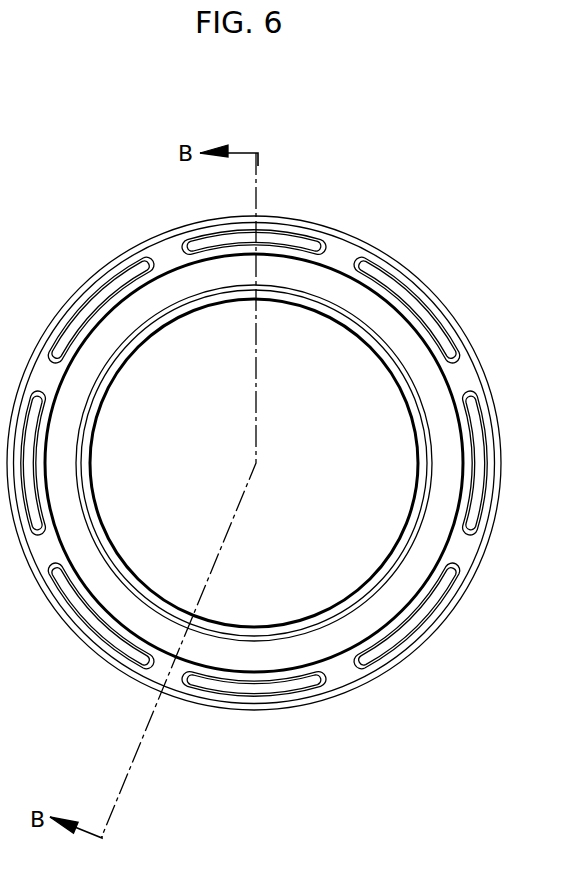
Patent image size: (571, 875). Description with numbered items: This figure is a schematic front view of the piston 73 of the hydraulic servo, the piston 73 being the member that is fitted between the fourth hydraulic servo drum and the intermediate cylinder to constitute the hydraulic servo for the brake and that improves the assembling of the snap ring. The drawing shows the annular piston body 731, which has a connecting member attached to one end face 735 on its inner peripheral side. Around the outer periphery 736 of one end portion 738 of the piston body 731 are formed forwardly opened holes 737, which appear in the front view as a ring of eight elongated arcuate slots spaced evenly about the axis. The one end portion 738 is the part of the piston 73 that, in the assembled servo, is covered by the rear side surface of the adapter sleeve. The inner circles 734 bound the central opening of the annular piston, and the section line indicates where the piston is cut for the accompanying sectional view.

The piston 73 is at (352, 238).
The piston body 731 is at (459, 380).
The central bore 734 is at (420, 467).
The one end face 735 is at (424, 417).
The outer periphery 736 is at (473, 377).
The forwardly opened holes 737 is at (425, 318).
The one end portion 738 is at (487, 511).